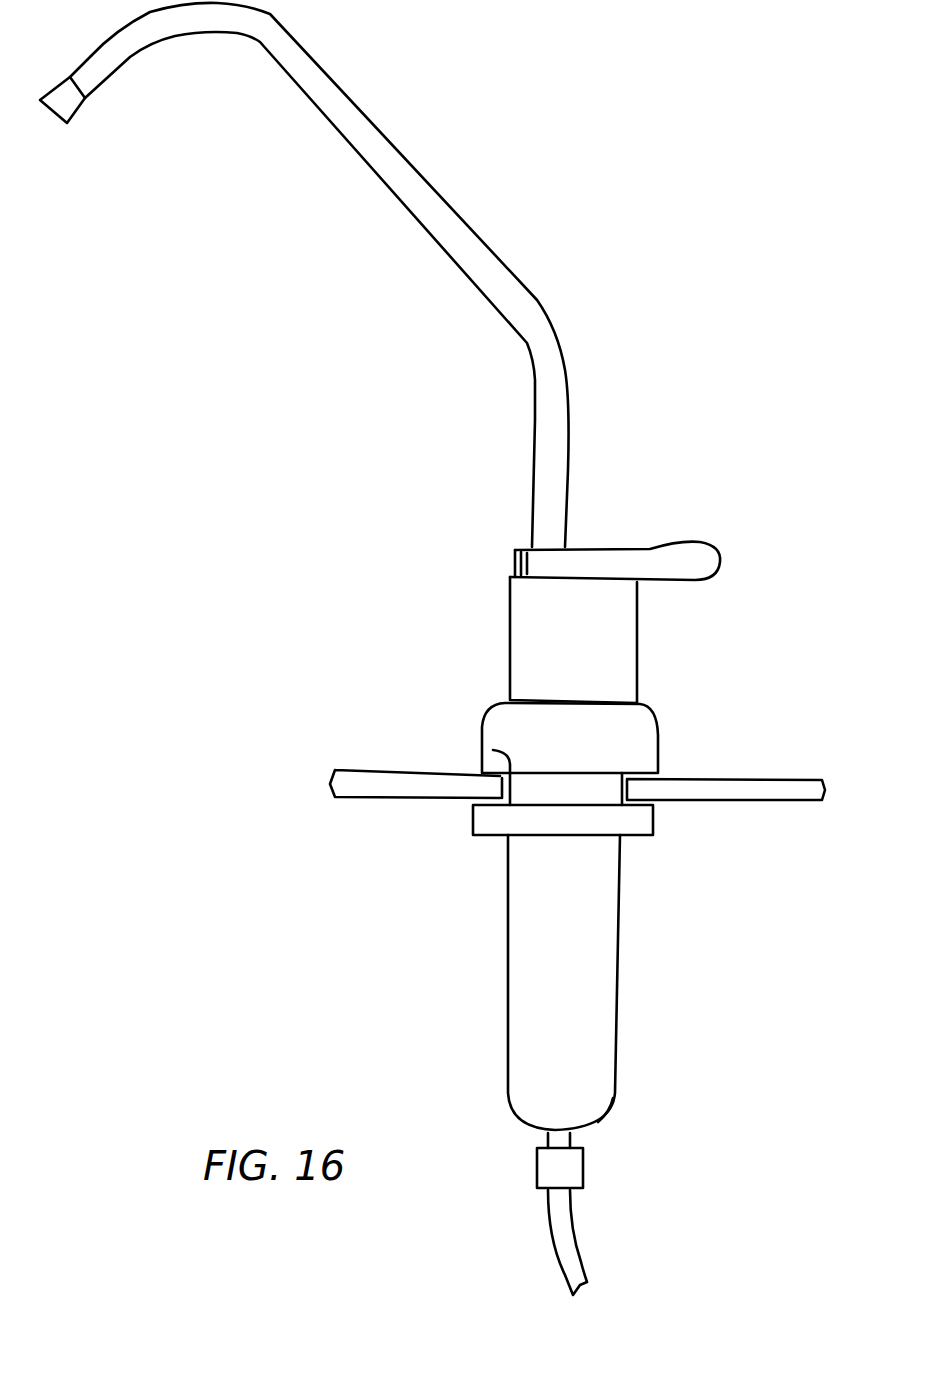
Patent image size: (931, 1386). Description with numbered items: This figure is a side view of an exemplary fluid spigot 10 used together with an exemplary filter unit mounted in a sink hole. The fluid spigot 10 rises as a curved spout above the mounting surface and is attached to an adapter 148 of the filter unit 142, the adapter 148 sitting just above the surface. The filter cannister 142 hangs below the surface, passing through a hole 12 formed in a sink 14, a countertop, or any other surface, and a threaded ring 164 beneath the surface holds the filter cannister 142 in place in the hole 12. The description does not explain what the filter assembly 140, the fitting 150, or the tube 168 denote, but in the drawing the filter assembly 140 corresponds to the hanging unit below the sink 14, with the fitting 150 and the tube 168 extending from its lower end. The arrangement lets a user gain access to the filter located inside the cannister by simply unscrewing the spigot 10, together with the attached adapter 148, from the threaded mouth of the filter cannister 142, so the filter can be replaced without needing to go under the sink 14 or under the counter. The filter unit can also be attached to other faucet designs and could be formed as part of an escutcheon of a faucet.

The fluid spigot 10 is at (415, 404).
The hole 12 is at (480, 748).
The sink 14 is at (783, 788).
The filter assembly 140 is at (547, 1065).
The filter cannister 142 is at (605, 1010).
The adapter 148 is at (650, 748).
The outlet fitting 150 is at (583, 1167).
The threaded ring 164 is at (652, 823).
The tube 168 is at (562, 1232).